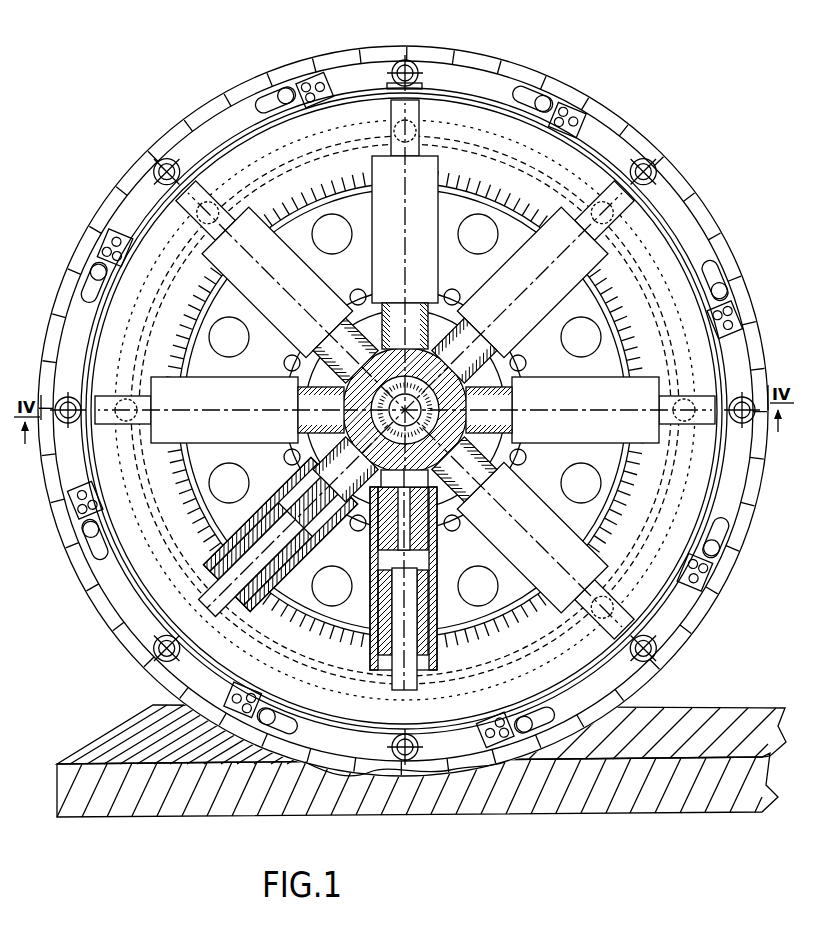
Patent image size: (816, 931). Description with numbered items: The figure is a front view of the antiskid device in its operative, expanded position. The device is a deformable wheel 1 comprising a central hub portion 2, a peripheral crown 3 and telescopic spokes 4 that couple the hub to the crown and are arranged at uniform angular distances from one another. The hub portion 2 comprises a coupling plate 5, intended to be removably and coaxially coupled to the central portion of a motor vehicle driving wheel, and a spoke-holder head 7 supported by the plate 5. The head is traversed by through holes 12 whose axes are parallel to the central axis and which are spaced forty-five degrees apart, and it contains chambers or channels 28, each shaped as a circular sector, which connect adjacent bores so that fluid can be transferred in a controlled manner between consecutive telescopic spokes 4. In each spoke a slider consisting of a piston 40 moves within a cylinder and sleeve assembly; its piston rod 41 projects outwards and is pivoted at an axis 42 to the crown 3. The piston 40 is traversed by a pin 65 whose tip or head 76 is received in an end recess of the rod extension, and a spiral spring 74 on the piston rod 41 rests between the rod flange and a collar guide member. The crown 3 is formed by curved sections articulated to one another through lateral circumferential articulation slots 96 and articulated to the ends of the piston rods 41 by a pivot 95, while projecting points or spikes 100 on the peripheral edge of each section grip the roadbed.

The deformable wheel 1 is at (180, 127).
The central hub portion 2 is at (338, 318).
The peripheral crown 3 is at (471, 48).
The telescopic spoke 4 is at (260, 379).
The coupling plate 5 is at (309, 555).
The spoke-holder head 7 is at (520, 384).
The through hole 12 is at (585, 350).
The chamber or channel 28 is at (524, 461).
The piston 40 is at (368, 541).
The piston rod 41 is at (397, 645).
The pivot axis 42 is at (396, 62).
The pin 65 is at (437, 535).
The spiral spring 74 is at (403, 580).
The tip or head of the pin 76 is at (380, 553).
The pivot 95 is at (646, 156).
The lateral circumferential articulation slot 96 is at (251, 92).
The projecting points or spikes 100 is at (99, 217).